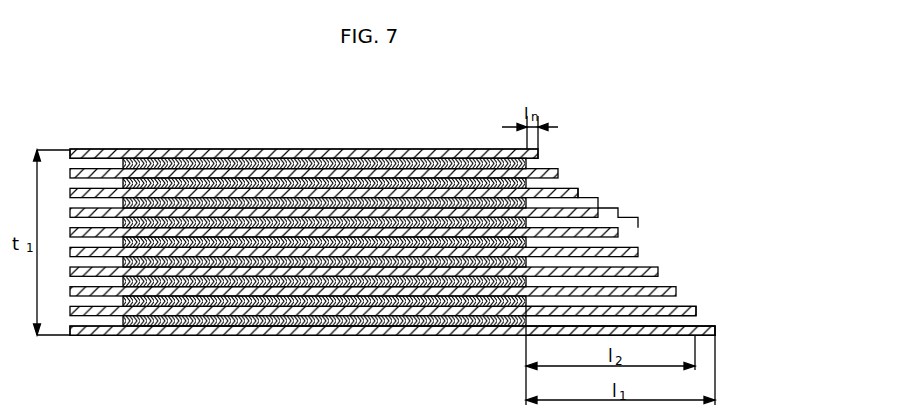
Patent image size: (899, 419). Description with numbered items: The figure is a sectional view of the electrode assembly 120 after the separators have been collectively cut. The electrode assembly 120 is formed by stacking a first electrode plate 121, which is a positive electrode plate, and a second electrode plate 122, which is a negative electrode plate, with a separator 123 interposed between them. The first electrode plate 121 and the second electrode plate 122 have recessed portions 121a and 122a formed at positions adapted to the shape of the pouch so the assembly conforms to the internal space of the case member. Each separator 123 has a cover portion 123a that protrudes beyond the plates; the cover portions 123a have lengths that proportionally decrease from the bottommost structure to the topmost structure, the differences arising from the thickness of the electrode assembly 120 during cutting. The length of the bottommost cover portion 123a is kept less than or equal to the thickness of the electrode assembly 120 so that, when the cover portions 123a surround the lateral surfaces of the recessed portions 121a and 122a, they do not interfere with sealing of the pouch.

The electrode assembly 120 is at (793, 148).
The first electrode plate 121 is at (190, 302).
The second electrode plate 122 is at (283, 297).
The separator 123 is at (378, 290).
The recessed portion 121a is at (527, 340).
The recessed portion 122a is at (527, 301).
The cover portion 123a is at (645, 218).